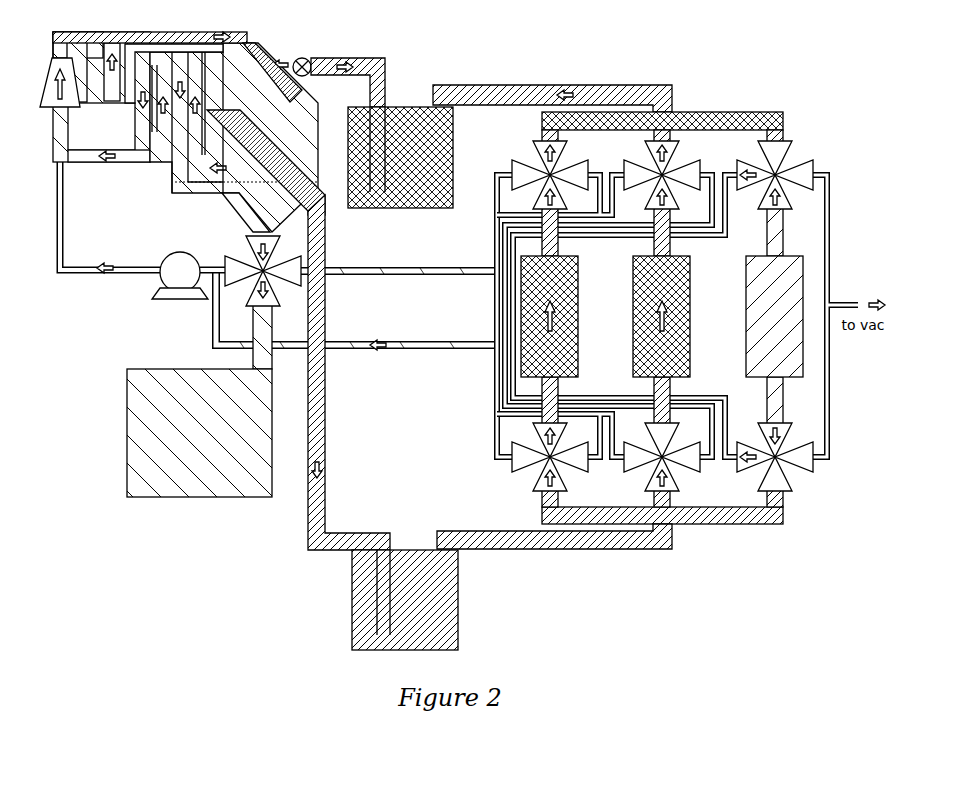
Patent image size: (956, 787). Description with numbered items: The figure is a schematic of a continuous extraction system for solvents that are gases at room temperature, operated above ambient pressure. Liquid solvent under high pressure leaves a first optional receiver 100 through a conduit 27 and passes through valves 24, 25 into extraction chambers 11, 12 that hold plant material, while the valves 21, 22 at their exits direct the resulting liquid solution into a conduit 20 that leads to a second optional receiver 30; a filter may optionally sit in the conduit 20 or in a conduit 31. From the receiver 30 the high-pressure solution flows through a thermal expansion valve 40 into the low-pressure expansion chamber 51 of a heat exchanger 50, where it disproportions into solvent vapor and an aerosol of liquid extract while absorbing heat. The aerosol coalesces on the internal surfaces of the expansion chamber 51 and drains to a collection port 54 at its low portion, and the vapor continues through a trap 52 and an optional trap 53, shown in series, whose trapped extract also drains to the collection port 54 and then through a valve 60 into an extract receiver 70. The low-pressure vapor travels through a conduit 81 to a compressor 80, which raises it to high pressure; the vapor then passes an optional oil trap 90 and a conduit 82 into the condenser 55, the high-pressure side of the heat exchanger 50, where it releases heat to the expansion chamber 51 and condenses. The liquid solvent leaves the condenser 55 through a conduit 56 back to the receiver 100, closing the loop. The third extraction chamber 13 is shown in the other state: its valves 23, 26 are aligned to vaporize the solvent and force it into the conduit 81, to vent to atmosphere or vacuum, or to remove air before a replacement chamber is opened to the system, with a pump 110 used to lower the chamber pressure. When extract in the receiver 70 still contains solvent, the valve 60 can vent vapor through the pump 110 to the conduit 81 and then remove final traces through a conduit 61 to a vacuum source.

The extraction chamber 11 is at (570, 292).
The extraction chamber 12 is at (648, 292).
The extraction chamber 13 is at (752, 292).
The conduit 20 is at (672, 102).
The valve 21 is at (546, 157).
The valve 22 is at (658, 157).
The valve 23 is at (770, 157).
The valve 24 is at (540, 480).
The valve 25 is at (656, 480).
The valve 26 is at (770, 480).
The conduit 27 is at (512, 532).
The receiver 30 is at (355, 125).
The conduit 31 is at (362, 66).
The thermal expansion valve 40 is at (305, 58).
The heat exchanger 50 is at (250, 52).
The expansion chamber 51 is at (266, 54).
The trap 52 is at (188, 58).
The trap 53 is at (167, 135).
The collection port 54 is at (239, 197).
The condenser 55 is at (306, 196).
The conduit 56 is at (327, 398).
The valve 60 is at (245, 283).
The conduit 61 is at (425, 276).
The extract receiver 70 is at (130, 404).
The compressor 80 is at (50, 90).
The conduit 81 is at (62, 136).
The conduit 82 is at (53, 45).
The oil trap 90 is at (110, 93).
The receiver 100 is at (352, 593).
The pump 110 is at (180, 284).